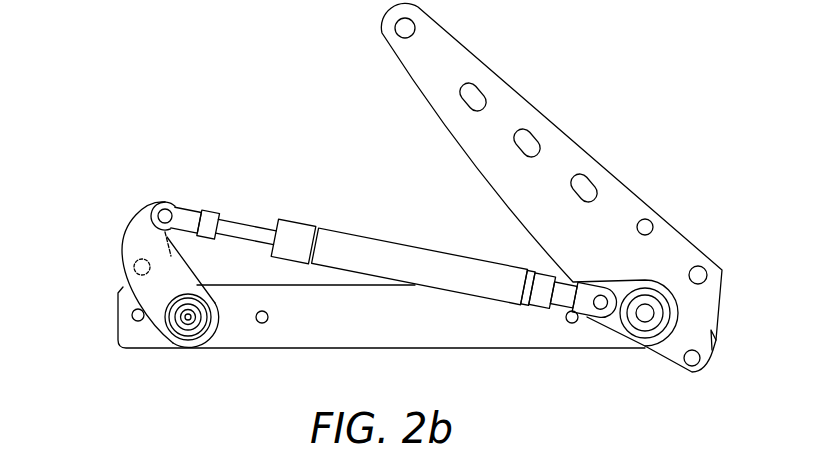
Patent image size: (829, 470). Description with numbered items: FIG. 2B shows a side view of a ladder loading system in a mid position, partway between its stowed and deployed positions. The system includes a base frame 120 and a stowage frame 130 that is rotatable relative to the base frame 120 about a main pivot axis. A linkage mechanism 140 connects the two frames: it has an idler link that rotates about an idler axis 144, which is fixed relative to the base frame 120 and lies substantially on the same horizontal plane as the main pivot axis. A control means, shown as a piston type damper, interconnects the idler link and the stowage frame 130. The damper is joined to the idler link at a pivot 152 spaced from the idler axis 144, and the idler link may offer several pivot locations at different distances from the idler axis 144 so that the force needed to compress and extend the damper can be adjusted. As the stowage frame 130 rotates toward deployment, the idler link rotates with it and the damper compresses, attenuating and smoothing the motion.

The base frame 120 is at (405, 349).
The stowage frame 130 is at (568, 148).
The linkage mechanism 140 is at (384, 243).
The idler axis 144 is at (190, 327).
The pivot 152 is at (168, 203).